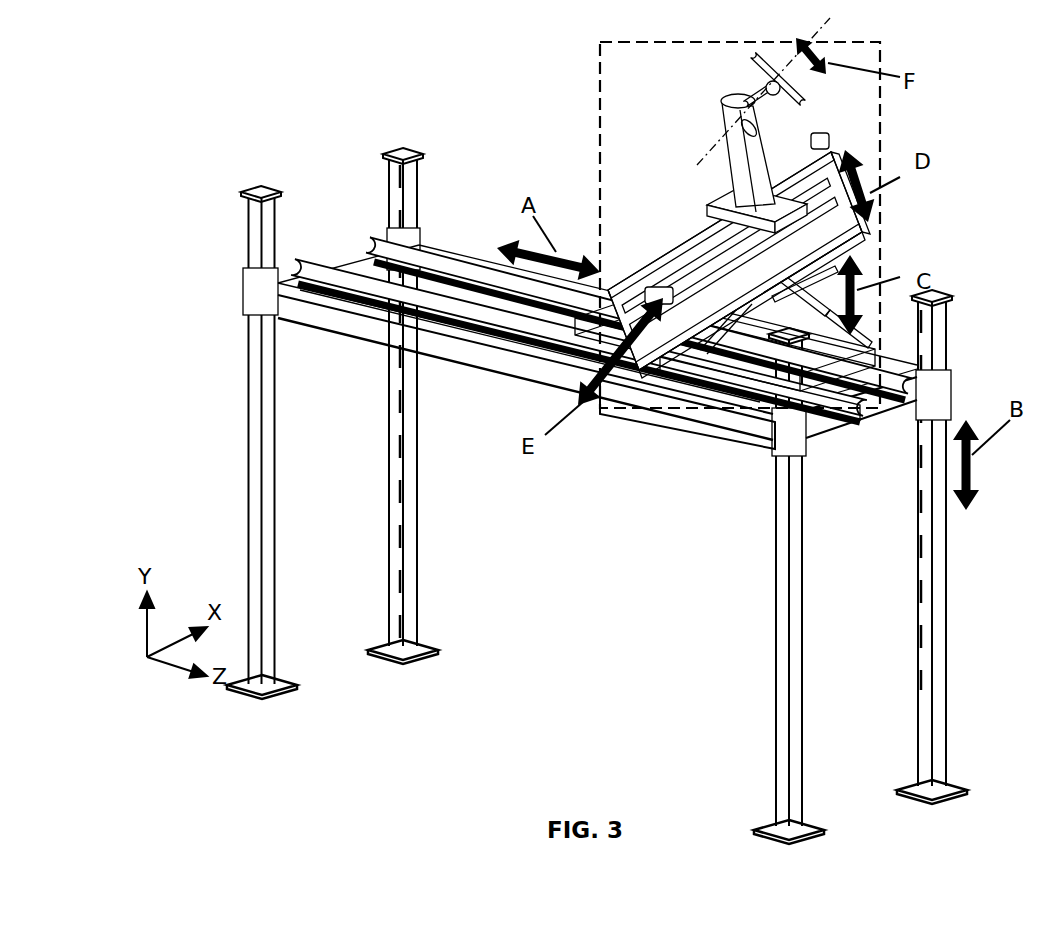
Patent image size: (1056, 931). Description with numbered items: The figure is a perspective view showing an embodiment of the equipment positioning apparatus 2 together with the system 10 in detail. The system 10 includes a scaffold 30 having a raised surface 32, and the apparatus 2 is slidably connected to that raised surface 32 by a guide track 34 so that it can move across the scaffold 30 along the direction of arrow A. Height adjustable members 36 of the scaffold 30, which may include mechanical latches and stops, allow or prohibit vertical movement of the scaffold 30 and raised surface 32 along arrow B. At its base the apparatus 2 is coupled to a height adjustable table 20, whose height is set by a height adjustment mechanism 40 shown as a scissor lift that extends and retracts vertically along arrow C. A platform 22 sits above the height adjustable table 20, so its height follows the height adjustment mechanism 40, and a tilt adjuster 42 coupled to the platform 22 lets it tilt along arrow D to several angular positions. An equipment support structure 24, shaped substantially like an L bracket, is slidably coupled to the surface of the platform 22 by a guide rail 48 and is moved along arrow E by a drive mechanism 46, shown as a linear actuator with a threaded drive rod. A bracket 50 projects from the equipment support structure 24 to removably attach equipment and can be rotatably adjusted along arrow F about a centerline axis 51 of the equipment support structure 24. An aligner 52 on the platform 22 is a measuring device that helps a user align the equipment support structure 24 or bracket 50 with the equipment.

The apparatus 2 is at (600, 95).
The system 10 is at (226, 148).
The height adjustable table 20 is at (733, 380).
The platform 22 is at (687, 230).
The equipment support structure 24 is at (730, 168).
The scaffold 30 is at (332, 335).
The raised surface 32 is at (460, 297).
The guide track 34 is at (310, 272).
The height adjustable members 36 is at (248, 507).
The height adjustment mechanism 40 is at (700, 360).
The tilt adjuster 42 is at (773, 253).
The drive mechanism 46 is at (660, 297).
The guide rail 48 is at (680, 257).
The bracket 50 is at (753, 57).
The centerline axis 51 is at (697, 165).
The aligner 52 is at (817, 140).